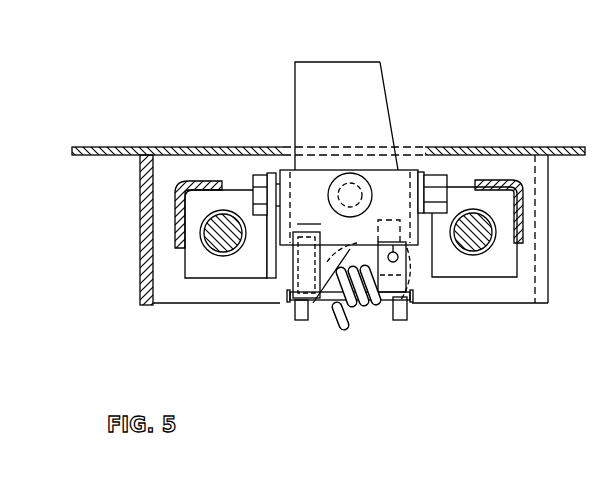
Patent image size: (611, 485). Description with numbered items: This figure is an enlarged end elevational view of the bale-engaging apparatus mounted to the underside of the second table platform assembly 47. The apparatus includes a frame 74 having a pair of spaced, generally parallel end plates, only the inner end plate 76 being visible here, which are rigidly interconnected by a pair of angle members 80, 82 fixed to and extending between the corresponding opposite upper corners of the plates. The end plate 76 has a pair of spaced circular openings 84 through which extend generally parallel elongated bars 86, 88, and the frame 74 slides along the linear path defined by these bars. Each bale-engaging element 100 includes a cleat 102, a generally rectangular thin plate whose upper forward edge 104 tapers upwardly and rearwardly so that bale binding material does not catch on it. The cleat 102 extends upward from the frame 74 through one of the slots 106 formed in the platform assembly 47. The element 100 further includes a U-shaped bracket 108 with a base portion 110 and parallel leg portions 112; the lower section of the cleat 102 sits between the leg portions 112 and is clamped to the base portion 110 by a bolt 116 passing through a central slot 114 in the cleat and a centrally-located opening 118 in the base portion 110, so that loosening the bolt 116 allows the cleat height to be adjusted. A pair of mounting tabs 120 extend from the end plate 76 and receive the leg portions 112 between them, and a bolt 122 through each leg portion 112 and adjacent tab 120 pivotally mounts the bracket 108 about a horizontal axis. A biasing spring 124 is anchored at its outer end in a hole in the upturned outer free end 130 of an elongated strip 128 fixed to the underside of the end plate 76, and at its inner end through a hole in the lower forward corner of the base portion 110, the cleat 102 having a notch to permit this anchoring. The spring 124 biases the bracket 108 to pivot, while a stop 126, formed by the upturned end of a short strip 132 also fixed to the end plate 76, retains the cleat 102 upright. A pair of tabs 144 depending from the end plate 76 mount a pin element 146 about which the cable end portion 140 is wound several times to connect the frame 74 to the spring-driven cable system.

The second table platform assembly 47 is at (93, 147).
The frame 74 is at (222, 282).
The end plate 76 is at (517, 265).
The angle member 80 is at (525, 192).
The angle member 82 is at (175, 208).
The circular opening 84 is at (205, 233).
The elongated bar 86 is at (480, 218).
The elongated bar 88 is at (218, 242).
The bale-engaging element 100 is at (390, 137).
The cleat 102 is at (338, 62).
The upper forward edge 104 is at (367, 160).
The slot 106 is at (272, 152).
The U-shaped bracket 108 is at (421, 166).
The base portion 110 is at (311, 217).
The leg portion 112 is at (262, 172).
The central slot 114 is at (323, 303).
The bolt 116 is at (357, 180).
The centrally-located opening 118 is at (387, 157).
The mounting tab 120 is at (288, 278).
The bolt 122 is at (255, 178).
The biasing spring 124 is at (399, 254).
The stop 126 is at (290, 262).
The elongated strip 128 is at (412, 308).
The upturned outer free end 130 is at (408, 270).
The short strip 132 is at (300, 290).
The cable end portion 140 is at (368, 312).
The tab 144 is at (297, 322).
The pin element 146 is at (350, 249).